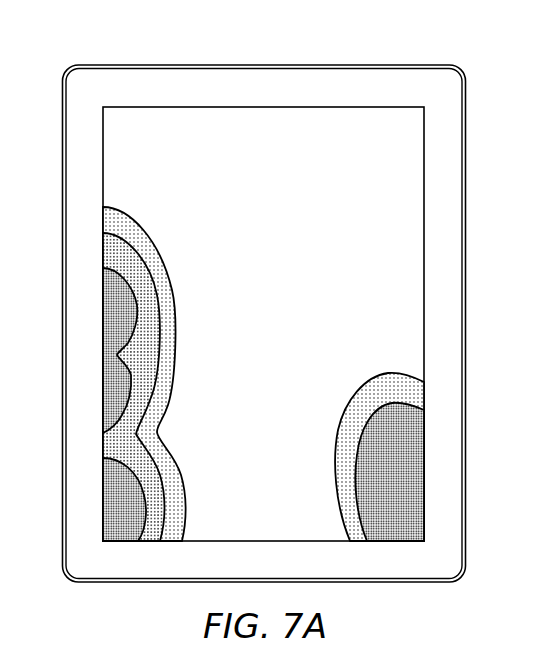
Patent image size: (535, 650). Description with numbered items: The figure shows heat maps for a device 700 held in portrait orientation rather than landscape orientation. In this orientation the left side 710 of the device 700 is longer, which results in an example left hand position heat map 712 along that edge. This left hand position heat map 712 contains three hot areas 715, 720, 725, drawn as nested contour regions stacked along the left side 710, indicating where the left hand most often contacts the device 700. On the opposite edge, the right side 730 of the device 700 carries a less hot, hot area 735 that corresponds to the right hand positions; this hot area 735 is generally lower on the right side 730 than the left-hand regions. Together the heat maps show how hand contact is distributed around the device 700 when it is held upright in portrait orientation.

The device 700 is at (389, 37).
The left side 710 is at (82, 282).
The left hand position heat map 712 is at (150, 239).
The hot area 715 is at (137, 305).
The hot area 720 is at (132, 398).
The hot area 725 is at (145, 490).
The right side 730 is at (447, 312).
The hot area 735 is at (355, 447).